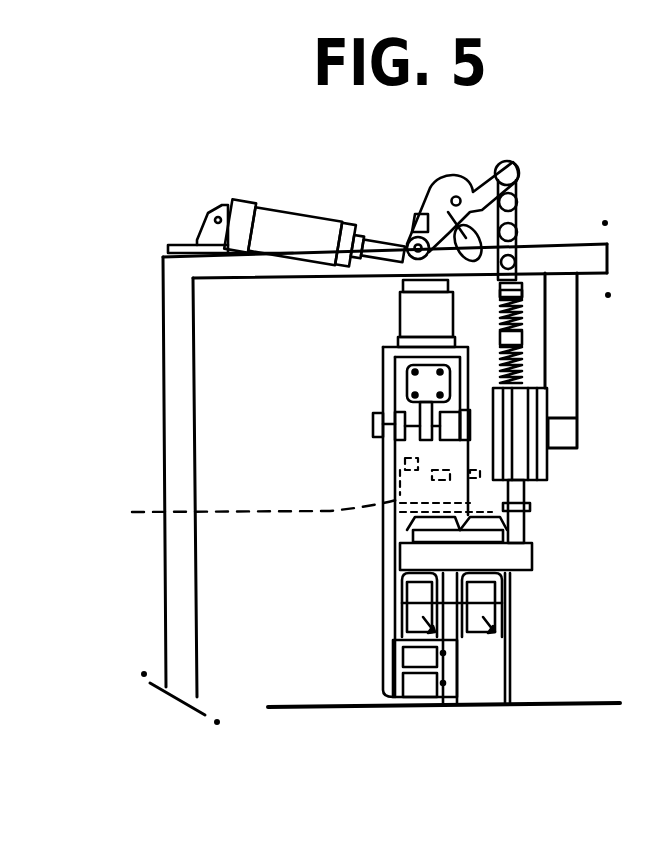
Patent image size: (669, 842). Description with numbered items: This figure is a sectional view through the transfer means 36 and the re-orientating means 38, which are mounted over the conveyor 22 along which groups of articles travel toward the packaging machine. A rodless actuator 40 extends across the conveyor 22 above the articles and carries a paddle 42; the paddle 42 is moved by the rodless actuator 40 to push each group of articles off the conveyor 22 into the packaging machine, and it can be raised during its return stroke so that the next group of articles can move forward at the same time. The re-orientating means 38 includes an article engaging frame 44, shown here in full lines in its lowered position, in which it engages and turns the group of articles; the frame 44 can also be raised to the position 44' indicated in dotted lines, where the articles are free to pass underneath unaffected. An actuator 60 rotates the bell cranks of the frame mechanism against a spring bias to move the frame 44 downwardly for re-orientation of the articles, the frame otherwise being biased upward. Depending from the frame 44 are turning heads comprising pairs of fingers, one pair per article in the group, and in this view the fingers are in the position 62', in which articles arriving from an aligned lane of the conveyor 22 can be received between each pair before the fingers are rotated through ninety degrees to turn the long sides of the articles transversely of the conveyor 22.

The conveyor 22 is at (577, 708).
The transfer means 36 is at (258, 447).
The re-orientating means 38 is at (560, 508).
The rodless actuator 40 is at (422, 323).
The paddle 42 is at (392, 668).
The article engaging frame 44 is at (388, 561).
The raised position of article engaging frame 44' is at (239, 501).
The actuator 60 is at (325, 212).
The receiving position of fingers 62' is at (516, 638).